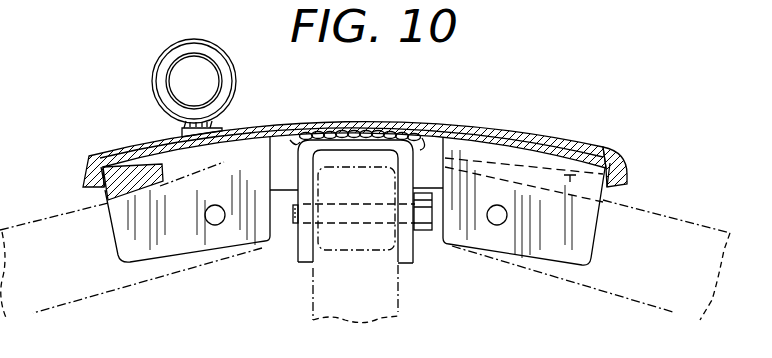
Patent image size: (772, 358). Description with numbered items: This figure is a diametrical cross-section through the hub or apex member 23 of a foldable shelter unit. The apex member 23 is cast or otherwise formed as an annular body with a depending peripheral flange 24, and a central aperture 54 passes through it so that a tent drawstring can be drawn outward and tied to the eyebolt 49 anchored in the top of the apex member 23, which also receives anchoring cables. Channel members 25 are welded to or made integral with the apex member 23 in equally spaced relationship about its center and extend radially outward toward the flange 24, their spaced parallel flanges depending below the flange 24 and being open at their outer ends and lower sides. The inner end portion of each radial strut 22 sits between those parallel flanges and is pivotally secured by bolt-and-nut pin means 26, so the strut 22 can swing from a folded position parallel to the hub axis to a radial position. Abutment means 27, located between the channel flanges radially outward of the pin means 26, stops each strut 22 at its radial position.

The radial strut 22 is at (7, 320).
The hub or apex member 23 is at (513, 135).
The depending peripheral flange 24 is at (627, 177).
The channel member 25 is at (605, 220).
The pin means 26 is at (425, 232).
The abutment means 27 is at (110, 207).
The eyebolt 49 is at (154, 71).
The central aperture 54 is at (322, 134).